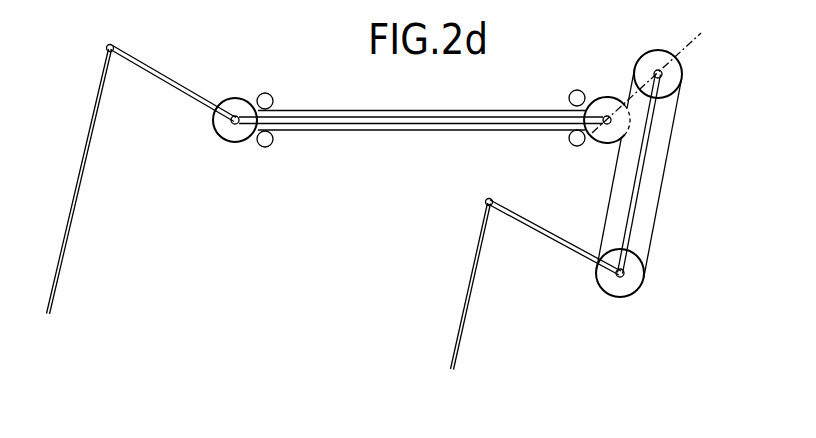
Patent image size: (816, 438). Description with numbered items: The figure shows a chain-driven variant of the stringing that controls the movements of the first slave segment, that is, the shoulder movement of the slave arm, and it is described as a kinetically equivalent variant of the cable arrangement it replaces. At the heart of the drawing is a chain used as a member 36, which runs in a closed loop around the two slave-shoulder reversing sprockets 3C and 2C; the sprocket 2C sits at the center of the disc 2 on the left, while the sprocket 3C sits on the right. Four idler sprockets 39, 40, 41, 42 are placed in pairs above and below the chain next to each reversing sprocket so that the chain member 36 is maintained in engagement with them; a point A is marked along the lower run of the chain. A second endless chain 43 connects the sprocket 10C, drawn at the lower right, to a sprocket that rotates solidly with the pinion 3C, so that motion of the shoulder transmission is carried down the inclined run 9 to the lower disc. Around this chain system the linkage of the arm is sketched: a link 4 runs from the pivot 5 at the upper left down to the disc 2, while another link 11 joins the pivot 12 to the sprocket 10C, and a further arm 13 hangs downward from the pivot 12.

The slave-shoulder reversing sprocket 2 is at (219, 137).
The slave-shoulder reversing sprocket 2C is at (237, 112).
The slave-shoulder reversing sprocket (pinion) 3C is at (606, 105).
The link 4 is at (186, 92).
The pivot 5 is at (113, 47).
The connecting rod 9 is at (632, 204).
The sprocket 10C is at (606, 291).
The link 11 is at (531, 223).
The pivot 12 is at (486, 200).
The lever arm 13 is at (464, 316).
The chain member 36 is at (452, 110).
The idler sprocket 39 is at (271, 96).
The idler sprocket 40 is at (270, 145).
The idler sprocket 41 is at (571, 93).
The idler sprocket 42 is at (571, 143).
The second endless chain 43 is at (657, 208).
The point A on bar A is at (394, 131).